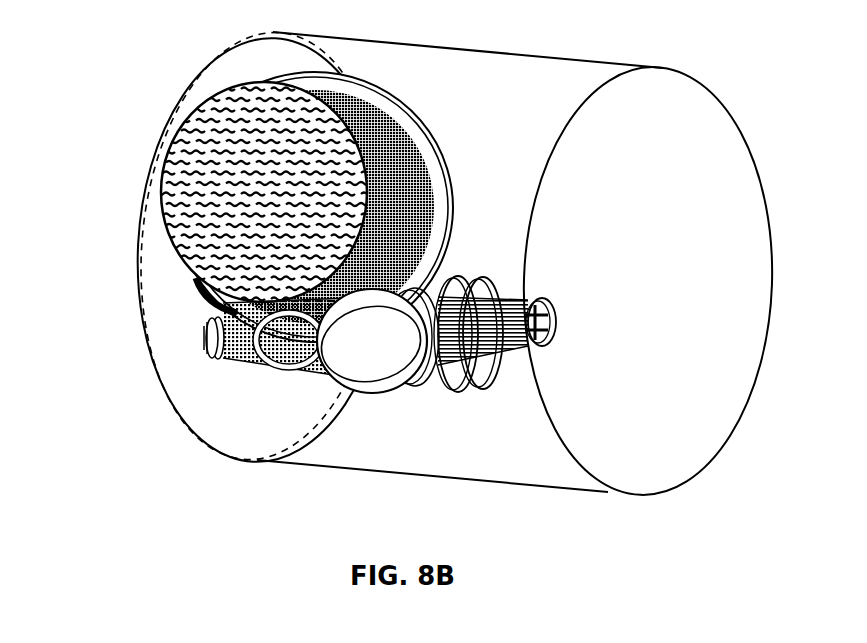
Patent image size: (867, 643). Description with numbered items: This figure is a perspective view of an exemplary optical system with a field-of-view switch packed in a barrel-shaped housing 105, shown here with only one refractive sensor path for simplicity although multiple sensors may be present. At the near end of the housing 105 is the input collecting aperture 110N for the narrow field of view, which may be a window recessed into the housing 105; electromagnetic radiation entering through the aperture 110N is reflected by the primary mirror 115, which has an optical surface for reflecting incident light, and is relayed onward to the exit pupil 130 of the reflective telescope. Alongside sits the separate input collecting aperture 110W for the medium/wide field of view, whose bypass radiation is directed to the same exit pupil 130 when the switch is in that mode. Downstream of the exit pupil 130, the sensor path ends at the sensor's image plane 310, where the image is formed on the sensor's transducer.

The housing 105 is at (697, 95).
The input collecting aperture 110N is at (167, 198).
The primary mirror 115 is at (422, 132).
The exit pupil 130 is at (220, 358).
The input collecting aperture 110W is at (367, 366).
The image plane 310 is at (555, 322).